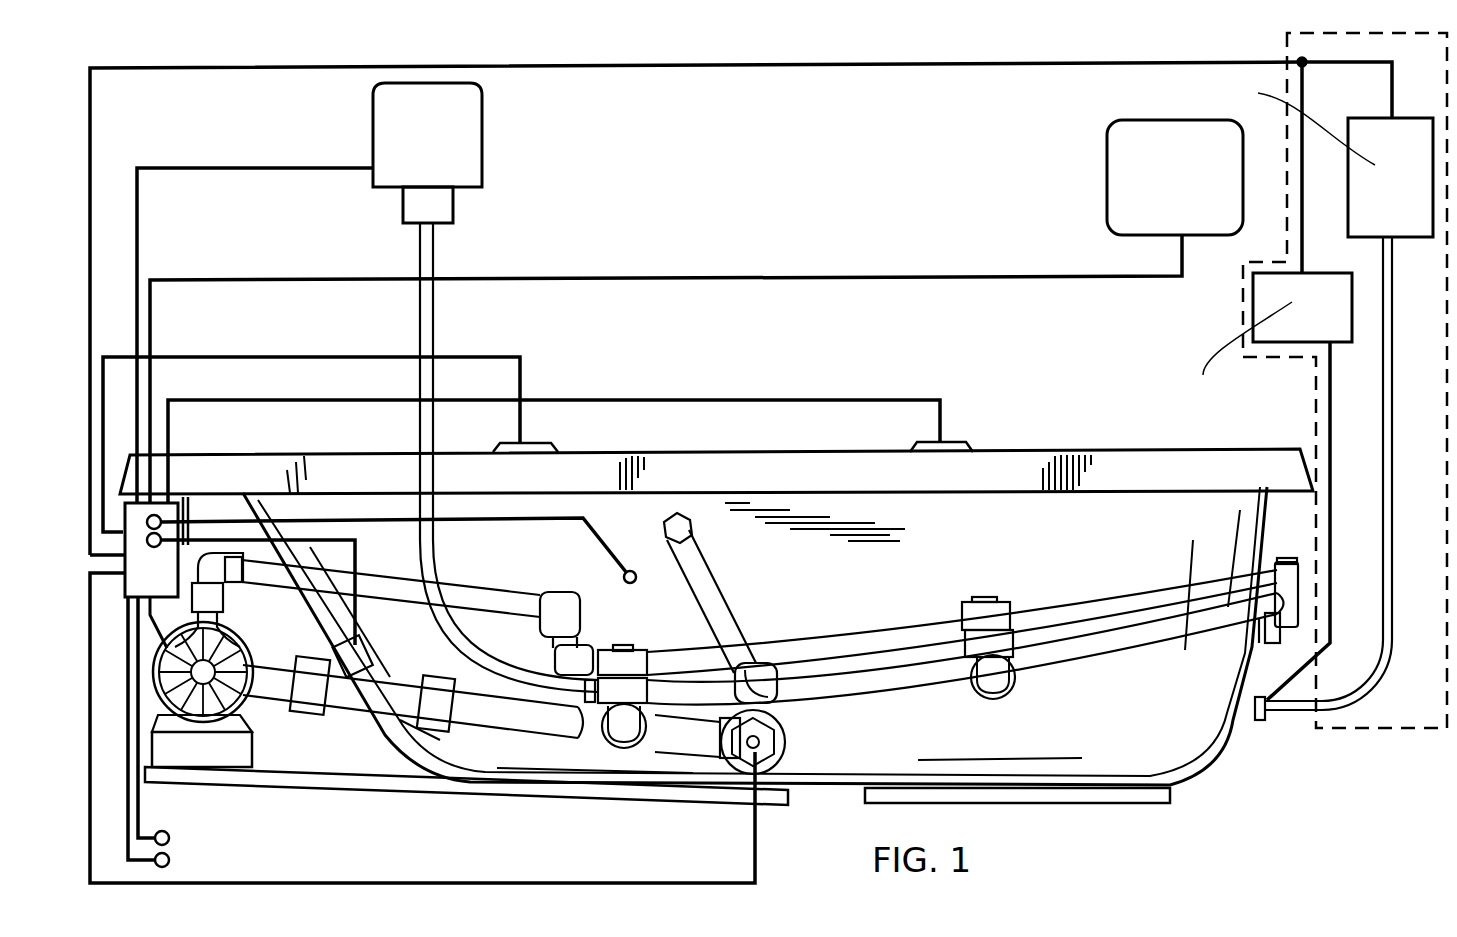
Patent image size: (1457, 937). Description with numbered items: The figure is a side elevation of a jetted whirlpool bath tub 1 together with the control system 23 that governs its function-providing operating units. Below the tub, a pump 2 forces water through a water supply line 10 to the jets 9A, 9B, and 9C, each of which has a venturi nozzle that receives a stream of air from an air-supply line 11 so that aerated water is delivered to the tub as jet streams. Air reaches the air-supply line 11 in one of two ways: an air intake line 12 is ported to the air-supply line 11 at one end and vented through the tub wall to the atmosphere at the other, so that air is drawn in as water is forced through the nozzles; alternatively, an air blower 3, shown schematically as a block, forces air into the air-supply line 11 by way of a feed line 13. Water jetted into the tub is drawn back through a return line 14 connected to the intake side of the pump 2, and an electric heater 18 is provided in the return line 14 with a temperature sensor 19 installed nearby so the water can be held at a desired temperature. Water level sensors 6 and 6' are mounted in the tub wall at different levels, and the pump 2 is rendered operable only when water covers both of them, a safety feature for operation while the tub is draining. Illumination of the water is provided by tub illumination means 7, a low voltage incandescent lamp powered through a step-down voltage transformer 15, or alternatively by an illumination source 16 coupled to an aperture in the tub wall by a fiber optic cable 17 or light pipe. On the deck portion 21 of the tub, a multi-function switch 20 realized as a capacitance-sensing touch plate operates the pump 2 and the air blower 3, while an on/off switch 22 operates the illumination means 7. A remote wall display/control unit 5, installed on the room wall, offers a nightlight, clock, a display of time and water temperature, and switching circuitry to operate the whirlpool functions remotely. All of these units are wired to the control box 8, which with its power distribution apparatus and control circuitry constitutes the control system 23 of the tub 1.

The jetted whirlpool bath tub 1 is at (1245, 766).
The pump 2 is at (157, 686).
The air blower 3 is at (483, 110).
The wall display/control unit 5 is at (1107, 154).
The water level sensor 6 is at (411, 560).
The water level sensor 6' is at (737, 742).
The tub illumination means 7 is at (1446, 476).
The control box 8 is at (130, 573).
The jet 9A is at (625, 728).
The jet 9B is at (993, 693).
The jet 9C is at (1298, 603).
The water supply line 10 is at (497, 598).
The air-supply line 11 is at (918, 660).
The air intake line 12 is at (712, 583).
The feed line 13 is at (437, 313).
The return line 14 is at (515, 722).
The step-down voltage transformer 15 is at (1348, 318).
The illumination source 16 is at (1422, 143).
The fiber optic cable 17 is at (1390, 386).
The electric heater 18 is at (348, 700).
The temperature sensor 19 is at (340, 653).
The multi-function switch 20 is at (538, 445).
The deck portion 21 is at (1022, 450).
The on/off switch 22 is at (956, 443).
The control system 23 is at (1052, 58).